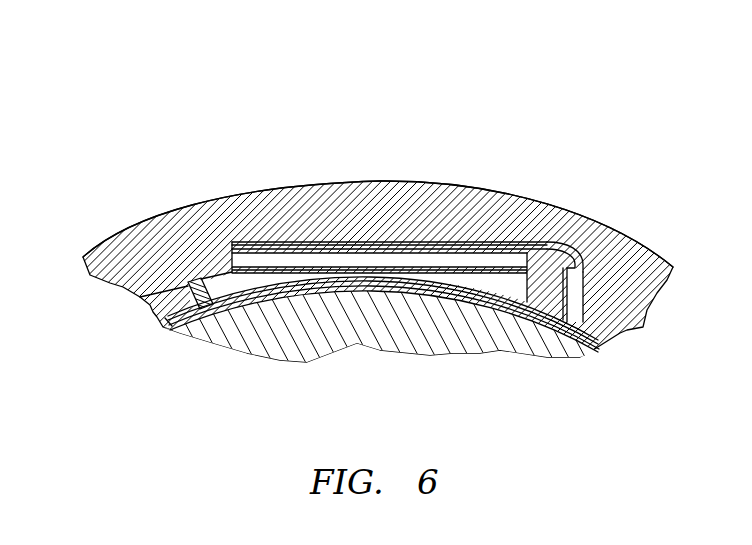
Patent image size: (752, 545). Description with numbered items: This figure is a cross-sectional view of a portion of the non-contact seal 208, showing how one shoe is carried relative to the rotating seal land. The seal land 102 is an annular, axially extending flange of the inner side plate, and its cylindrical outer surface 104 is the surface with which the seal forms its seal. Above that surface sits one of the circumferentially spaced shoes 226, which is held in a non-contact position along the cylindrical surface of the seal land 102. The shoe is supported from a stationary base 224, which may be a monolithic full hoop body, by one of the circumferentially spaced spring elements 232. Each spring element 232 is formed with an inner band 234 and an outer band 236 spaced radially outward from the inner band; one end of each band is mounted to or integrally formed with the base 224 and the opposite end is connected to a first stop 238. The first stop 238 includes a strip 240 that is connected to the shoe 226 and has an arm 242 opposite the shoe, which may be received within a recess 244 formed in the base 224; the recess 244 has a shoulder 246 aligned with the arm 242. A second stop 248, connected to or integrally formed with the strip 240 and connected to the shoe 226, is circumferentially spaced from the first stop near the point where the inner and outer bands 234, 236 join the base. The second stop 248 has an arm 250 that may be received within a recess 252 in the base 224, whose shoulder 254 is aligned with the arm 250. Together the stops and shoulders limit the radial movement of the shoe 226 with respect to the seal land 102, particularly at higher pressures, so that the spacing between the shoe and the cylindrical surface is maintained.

The non-contact seal 208 is at (192, 113).
The annular seal land 102 is at (487, 333).
The cylindrical outer surface 104 is at (358, 282).
The stationary base 224 is at (133, 250).
The shoe 226 is at (170, 333).
The spring element 232 is at (498, 233).
The inner band 234 is at (273, 285).
The outer band 236 is at (386, 245).
The first stop 238 is at (548, 242).
The strip 240 is at (540, 357).
The arm 242 is at (582, 247).
The recess 244 is at (590, 260).
The shoulder 246 is at (584, 290).
The second stop 248 is at (200, 310).
The arm 250 is at (190, 282).
The recess 252 is at (188, 287).
The shoulder 254 is at (157, 317).